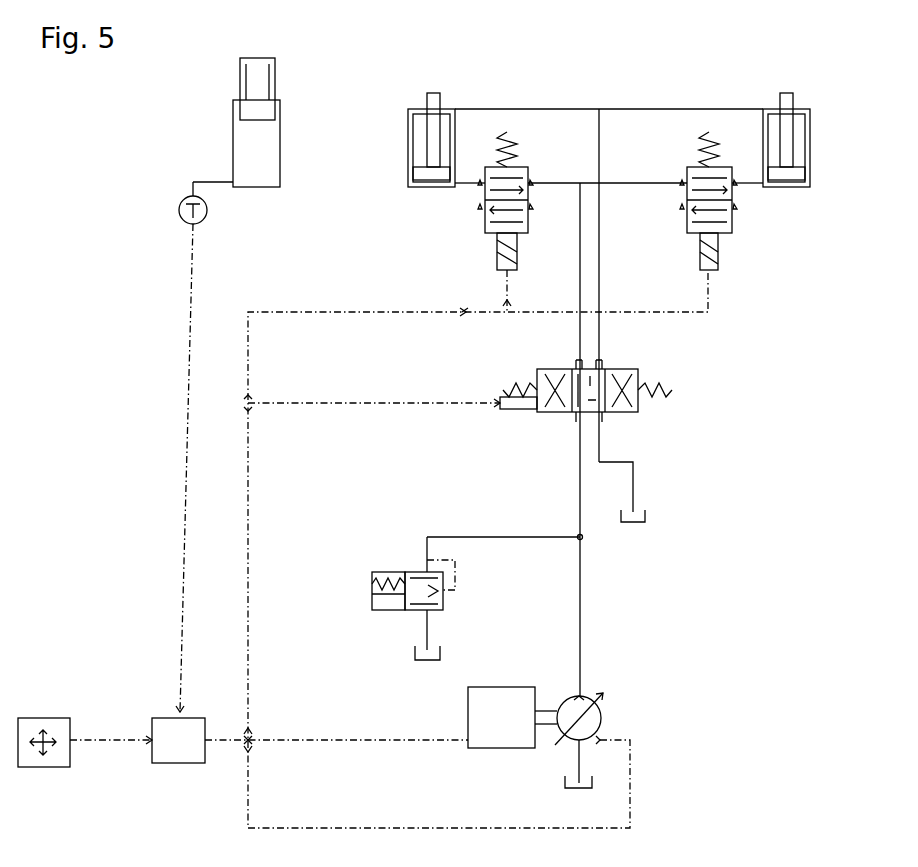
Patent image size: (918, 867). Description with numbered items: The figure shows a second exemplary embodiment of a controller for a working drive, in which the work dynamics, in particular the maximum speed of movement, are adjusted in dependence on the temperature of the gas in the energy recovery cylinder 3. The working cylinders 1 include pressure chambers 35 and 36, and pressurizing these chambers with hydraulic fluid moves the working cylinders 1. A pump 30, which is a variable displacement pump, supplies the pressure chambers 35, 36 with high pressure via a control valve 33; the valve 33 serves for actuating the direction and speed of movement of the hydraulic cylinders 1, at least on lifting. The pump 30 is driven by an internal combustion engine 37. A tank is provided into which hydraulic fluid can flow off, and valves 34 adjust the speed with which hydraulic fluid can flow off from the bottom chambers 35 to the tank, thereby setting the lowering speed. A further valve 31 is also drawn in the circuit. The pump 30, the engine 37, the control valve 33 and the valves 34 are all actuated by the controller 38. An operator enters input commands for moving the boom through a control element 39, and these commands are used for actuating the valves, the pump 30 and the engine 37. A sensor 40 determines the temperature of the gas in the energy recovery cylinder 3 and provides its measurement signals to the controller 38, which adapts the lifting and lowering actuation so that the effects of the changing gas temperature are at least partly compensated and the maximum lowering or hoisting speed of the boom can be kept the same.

The working cylinders 1 is at (757, 95).
The energy recovery cylinder 3 is at (283, 150).
The pump 30 is at (594, 692).
The pressure relief valve 31 is at (448, 603).
The control valve 33 is at (645, 415).
The valves 34 is at (515, 158).
The pressure chamber 35 is at (800, 190).
The pressure chamber 36 is at (800, 120).
The internal combustion engine 37 is at (478, 752).
The controller 38 is at (163, 768).
The control element 39 is at (40, 712).
The sensor 40 is at (178, 213).